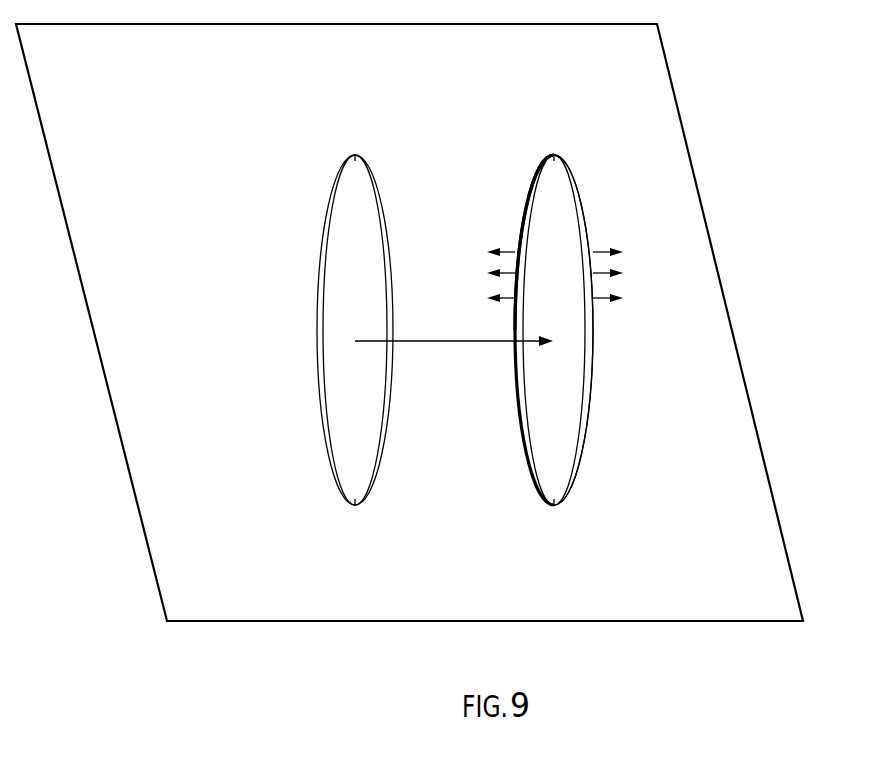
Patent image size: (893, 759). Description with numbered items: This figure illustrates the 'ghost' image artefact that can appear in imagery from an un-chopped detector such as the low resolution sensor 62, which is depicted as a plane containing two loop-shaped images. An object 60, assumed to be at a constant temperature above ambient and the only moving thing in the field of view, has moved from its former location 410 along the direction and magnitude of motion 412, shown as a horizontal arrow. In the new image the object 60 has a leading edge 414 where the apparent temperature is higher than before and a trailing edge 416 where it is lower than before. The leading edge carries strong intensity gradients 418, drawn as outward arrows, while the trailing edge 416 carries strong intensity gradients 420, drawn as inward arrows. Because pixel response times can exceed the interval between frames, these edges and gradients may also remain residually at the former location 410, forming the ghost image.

The low resolution sensor 62 is at (88, 362).
The former location 410 is at (353, 460).
The object 60 is at (552, 460).
The trailing edge 416 is at (524, 167).
The leading edge 414 is at (593, 387).
The direction and magnitude of motion 412 is at (484, 360).
The intensity gradients 420 is at (507, 228).
The intensity gradients 418 is at (604, 228).